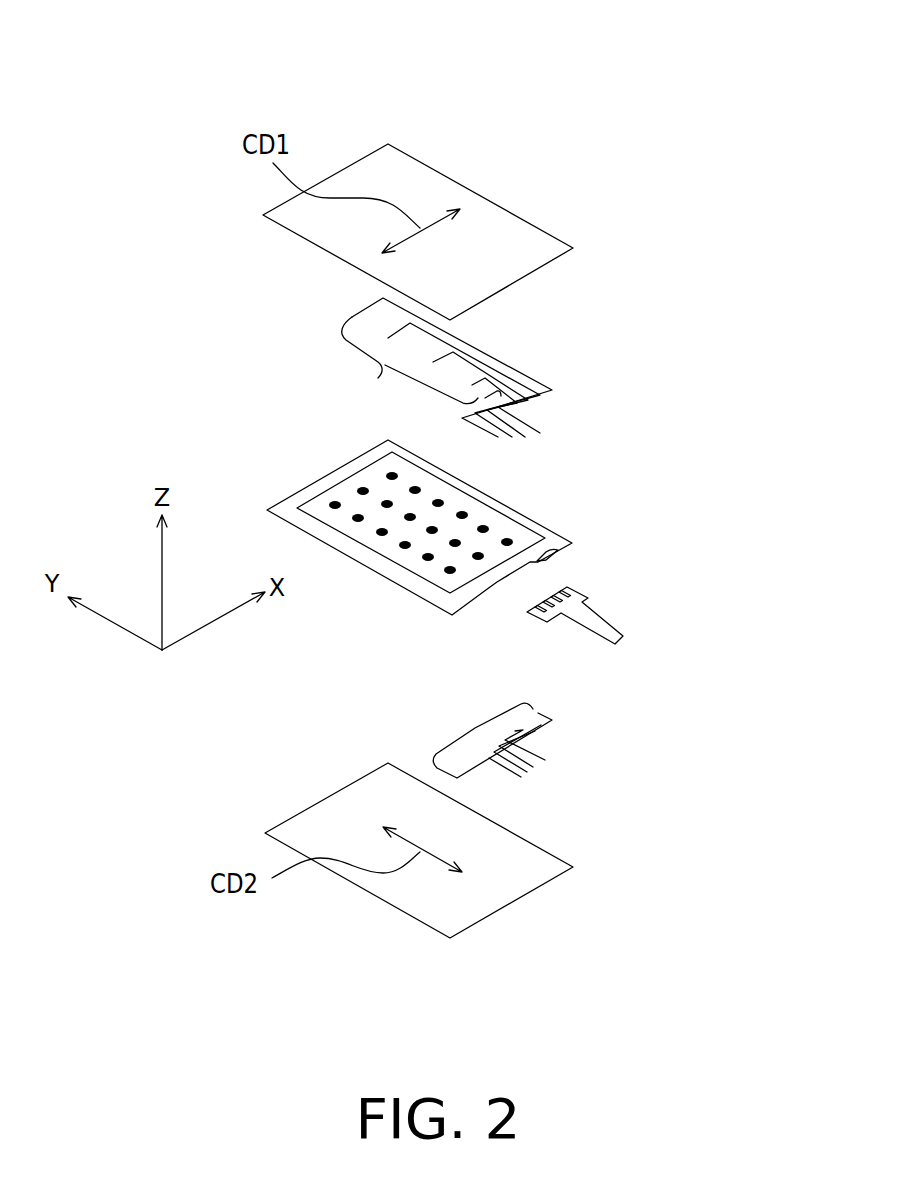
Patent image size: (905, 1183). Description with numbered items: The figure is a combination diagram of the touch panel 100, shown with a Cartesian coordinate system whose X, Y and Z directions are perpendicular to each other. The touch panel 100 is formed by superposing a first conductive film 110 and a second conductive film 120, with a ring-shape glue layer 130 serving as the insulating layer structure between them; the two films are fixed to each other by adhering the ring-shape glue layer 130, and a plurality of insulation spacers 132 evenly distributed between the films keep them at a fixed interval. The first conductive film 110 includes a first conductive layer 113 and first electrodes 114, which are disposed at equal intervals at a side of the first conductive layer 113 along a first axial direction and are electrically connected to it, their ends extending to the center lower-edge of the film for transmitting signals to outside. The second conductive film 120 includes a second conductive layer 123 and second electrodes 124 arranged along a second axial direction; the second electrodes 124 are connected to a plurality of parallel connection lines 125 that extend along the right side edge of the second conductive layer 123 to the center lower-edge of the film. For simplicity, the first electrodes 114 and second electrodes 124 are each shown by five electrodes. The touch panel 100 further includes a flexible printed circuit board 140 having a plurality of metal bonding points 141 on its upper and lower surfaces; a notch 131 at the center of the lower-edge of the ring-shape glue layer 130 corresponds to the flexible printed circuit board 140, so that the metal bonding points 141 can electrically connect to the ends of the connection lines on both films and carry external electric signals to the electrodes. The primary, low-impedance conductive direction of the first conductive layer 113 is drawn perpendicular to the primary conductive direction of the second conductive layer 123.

The touch panel 100 is at (164, 91).
The first conductive film 110 is at (653, 688).
The first conductive layer 113 is at (540, 866).
The first electrodes 114 is at (474, 729).
The second conductive film 120 is at (700, 145).
The second conductive layer 123 is at (527, 237).
The second electrodes 124 is at (420, 369).
The connection lines 125 is at (512, 368).
The ring-shape glue layer 130 is at (444, 512).
The notch 131 is at (560, 552).
The insulation spacers 132 is at (335, 505).
The flexible printed circuit board 140 is at (647, 599).
The metal bonding points 141 is at (586, 593).